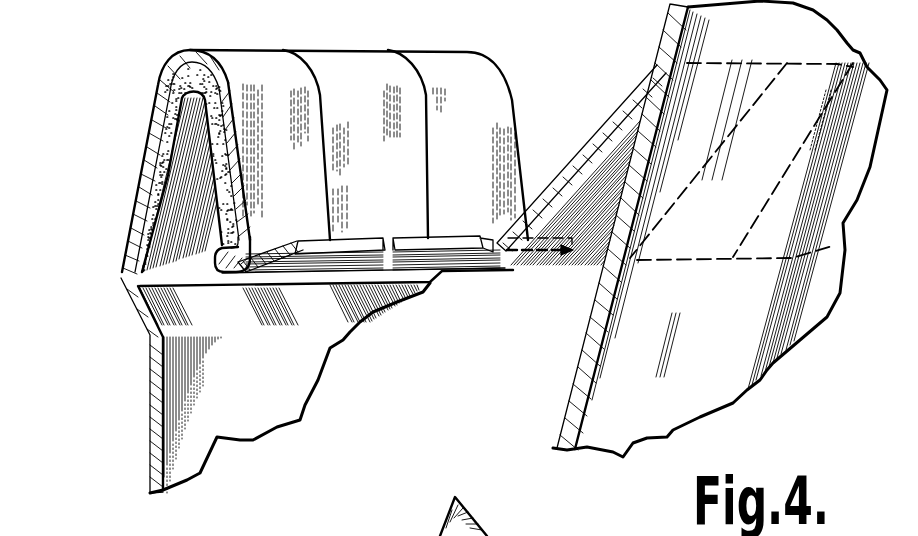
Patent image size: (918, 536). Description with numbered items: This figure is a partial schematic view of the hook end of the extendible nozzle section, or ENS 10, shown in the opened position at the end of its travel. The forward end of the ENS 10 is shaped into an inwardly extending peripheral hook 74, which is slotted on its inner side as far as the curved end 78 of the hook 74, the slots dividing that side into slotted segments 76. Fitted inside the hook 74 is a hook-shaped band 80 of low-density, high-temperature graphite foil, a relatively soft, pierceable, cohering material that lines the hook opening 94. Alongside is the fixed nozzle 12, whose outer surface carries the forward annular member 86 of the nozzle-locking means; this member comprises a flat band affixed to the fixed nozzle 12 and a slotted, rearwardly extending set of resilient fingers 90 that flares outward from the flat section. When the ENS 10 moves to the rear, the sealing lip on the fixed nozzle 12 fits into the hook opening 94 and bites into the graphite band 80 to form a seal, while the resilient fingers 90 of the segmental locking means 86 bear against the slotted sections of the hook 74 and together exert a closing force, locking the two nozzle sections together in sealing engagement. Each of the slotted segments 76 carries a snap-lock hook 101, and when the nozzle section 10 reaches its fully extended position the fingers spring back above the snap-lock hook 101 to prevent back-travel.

The extendible nozzle section (ENS) 10 is at (147, 408).
The fixed nozzle 12 is at (585, 403).
The peripheral hook 74 is at (153, 98).
The slotted segments 76 is at (320, 175).
The curved end of the hook 78 is at (190, 48).
The hook-shaped graphite band 80 is at (170, 181).
The forward annular member of the nozzle-locking means 86 is at (601, 112).
The resilient fingers 90 is at (693, 236).
The hook opening 94 is at (193, 127).
The snap-lock hook 101 is at (408, 238).